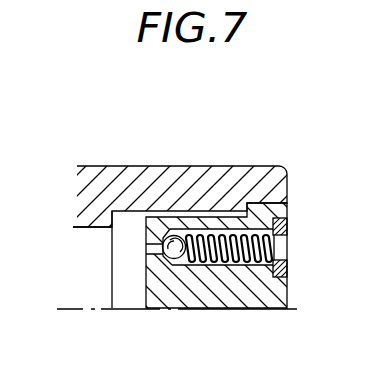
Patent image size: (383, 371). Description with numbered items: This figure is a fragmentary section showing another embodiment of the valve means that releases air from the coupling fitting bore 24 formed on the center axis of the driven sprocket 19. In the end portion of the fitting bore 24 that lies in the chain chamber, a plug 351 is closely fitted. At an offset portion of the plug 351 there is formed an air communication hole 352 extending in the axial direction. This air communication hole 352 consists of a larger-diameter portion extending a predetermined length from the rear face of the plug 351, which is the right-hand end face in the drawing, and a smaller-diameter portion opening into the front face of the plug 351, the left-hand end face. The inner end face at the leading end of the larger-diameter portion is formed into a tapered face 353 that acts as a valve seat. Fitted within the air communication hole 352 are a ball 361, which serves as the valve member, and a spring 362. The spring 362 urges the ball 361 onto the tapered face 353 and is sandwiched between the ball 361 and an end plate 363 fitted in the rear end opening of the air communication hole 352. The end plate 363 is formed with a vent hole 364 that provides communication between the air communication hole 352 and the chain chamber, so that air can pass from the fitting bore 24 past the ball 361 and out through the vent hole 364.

The driven sprocket 19 is at (115, 182).
The coupling fitting bore 24 is at (105, 232).
The plug 351 is at (161, 284).
The air communication hole 352 is at (240, 258).
The tapered face 353 is at (178, 262).
The ball 361 is at (168, 230).
The spring 362 is at (218, 230).
The end plate 363 is at (292, 270).
The vent hole 364 is at (290, 248).